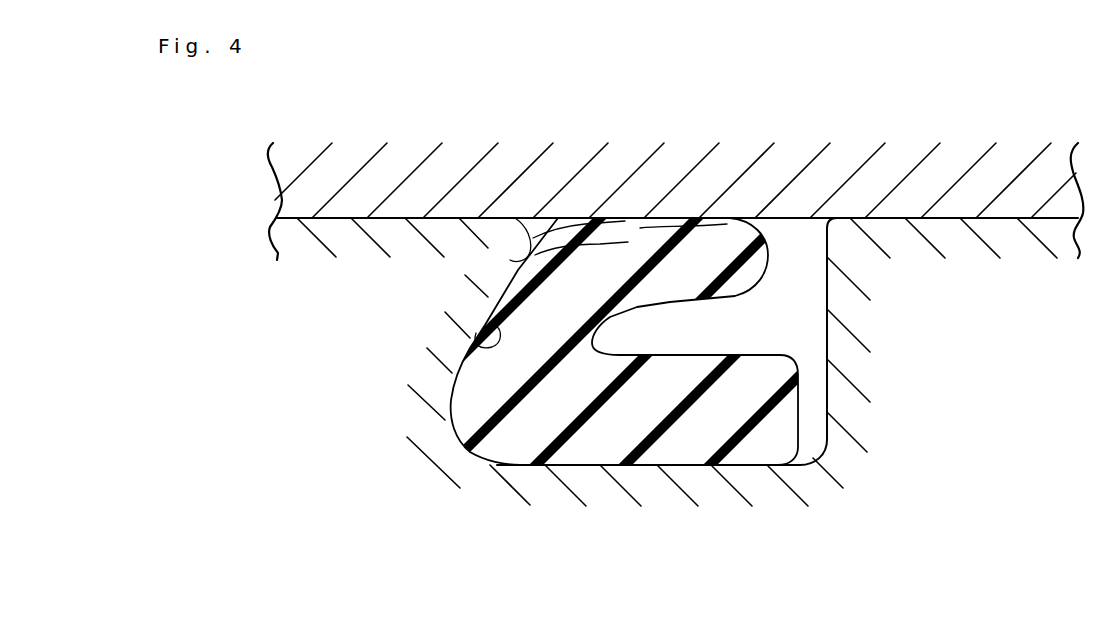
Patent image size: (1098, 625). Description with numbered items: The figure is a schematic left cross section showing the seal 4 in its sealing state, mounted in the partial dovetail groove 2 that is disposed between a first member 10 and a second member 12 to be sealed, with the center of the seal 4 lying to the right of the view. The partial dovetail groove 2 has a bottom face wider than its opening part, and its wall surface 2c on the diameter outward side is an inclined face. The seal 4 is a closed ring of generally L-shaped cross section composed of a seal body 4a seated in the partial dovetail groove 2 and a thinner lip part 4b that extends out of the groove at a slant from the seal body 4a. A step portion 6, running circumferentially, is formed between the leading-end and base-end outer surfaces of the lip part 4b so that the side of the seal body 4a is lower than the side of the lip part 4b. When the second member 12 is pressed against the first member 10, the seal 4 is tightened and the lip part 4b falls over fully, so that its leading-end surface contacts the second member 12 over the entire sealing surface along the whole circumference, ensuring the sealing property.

The partial dovetail groove 2 is at (822, 278).
The wall surface on diameter outward side 2c is at (473, 347).
The seal 4 is at (656, 330).
The seal body 4a is at (690, 420).
The lip part 4b is at (656, 228).
The step portion 6 is at (514, 262).
The first member 10 is at (303, 250).
The second member 12 is at (305, 182).